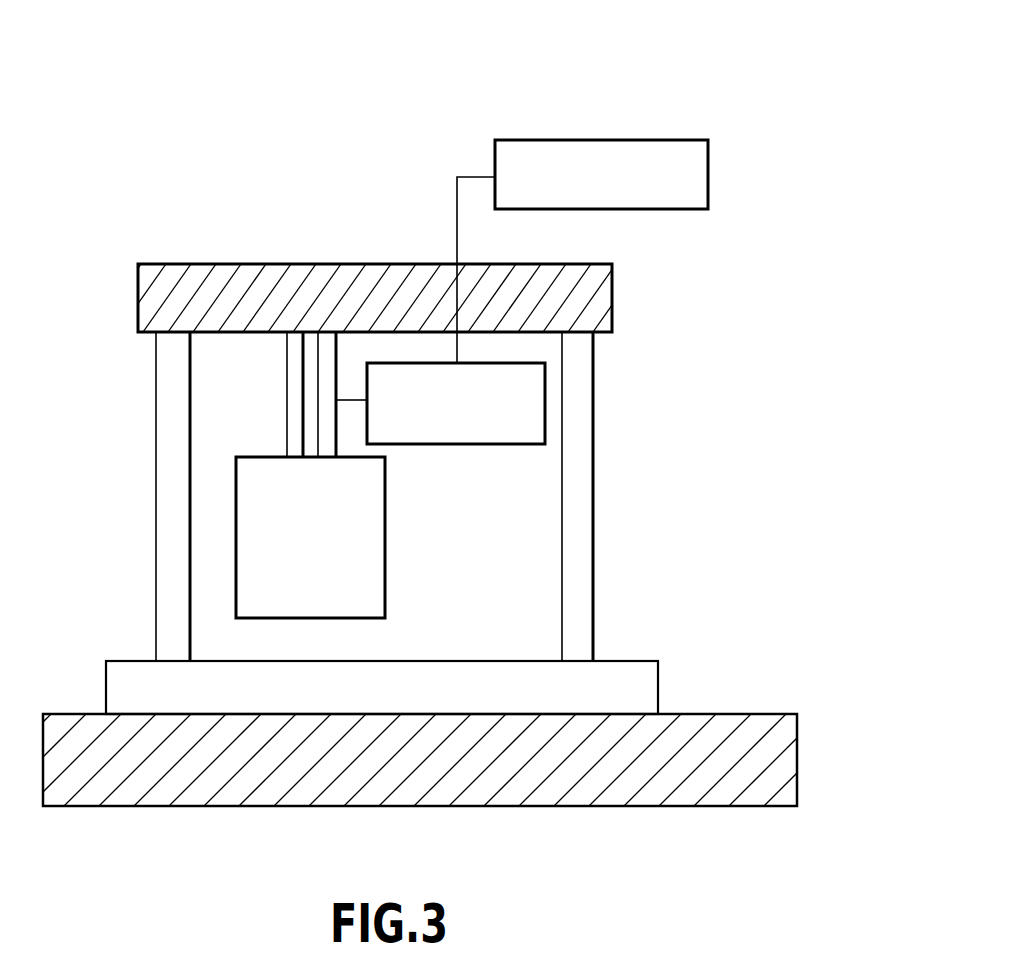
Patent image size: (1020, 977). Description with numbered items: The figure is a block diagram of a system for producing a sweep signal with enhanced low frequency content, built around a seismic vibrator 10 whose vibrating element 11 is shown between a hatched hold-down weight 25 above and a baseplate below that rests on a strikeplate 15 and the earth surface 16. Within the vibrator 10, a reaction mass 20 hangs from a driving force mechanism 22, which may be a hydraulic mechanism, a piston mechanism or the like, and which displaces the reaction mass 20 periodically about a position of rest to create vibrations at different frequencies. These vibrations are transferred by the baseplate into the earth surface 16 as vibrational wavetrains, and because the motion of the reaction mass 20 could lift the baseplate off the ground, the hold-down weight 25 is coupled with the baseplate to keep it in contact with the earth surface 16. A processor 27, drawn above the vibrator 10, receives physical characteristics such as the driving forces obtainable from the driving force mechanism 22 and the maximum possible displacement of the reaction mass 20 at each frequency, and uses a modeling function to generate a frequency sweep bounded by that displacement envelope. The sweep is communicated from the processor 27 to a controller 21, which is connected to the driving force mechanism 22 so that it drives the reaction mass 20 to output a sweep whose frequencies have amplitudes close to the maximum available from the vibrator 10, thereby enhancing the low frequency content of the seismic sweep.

The seismic vibrator 10 is at (449, 96).
The vibrating element 11 is at (667, 384).
The strikeplate 15 is at (637, 662).
The earth surface 16 is at (70, 713).
The reaction mass 20 is at (385, 550).
The controller 21 is at (463, 445).
The driving force mechanism 22 is at (287, 385).
The hold-down weight 25 is at (146, 264).
The processor 27 is at (710, 177).